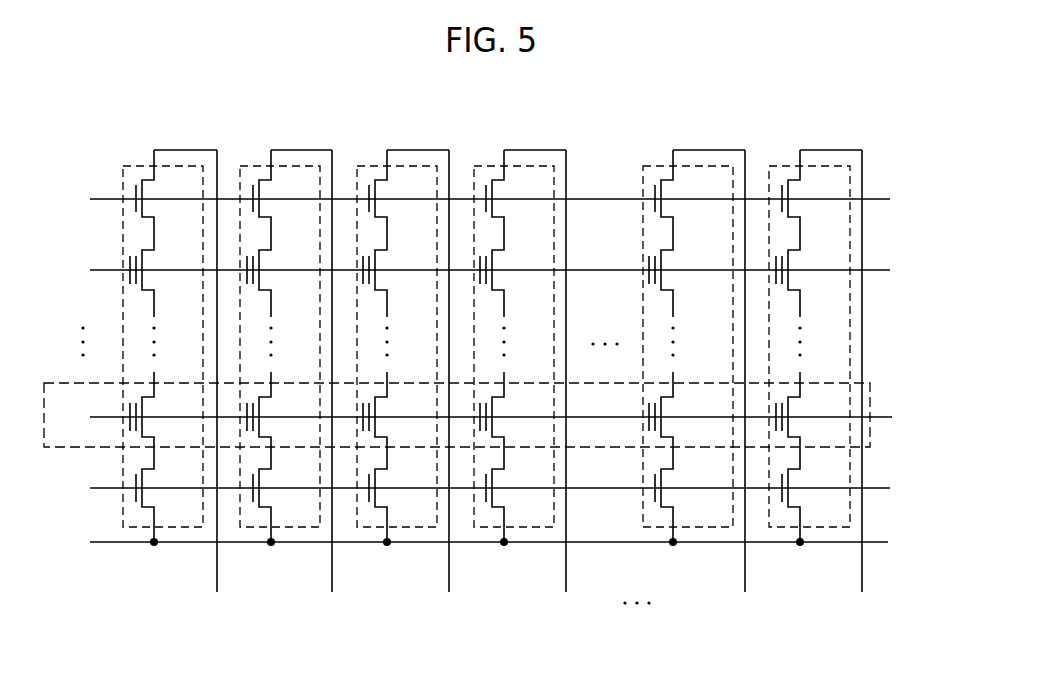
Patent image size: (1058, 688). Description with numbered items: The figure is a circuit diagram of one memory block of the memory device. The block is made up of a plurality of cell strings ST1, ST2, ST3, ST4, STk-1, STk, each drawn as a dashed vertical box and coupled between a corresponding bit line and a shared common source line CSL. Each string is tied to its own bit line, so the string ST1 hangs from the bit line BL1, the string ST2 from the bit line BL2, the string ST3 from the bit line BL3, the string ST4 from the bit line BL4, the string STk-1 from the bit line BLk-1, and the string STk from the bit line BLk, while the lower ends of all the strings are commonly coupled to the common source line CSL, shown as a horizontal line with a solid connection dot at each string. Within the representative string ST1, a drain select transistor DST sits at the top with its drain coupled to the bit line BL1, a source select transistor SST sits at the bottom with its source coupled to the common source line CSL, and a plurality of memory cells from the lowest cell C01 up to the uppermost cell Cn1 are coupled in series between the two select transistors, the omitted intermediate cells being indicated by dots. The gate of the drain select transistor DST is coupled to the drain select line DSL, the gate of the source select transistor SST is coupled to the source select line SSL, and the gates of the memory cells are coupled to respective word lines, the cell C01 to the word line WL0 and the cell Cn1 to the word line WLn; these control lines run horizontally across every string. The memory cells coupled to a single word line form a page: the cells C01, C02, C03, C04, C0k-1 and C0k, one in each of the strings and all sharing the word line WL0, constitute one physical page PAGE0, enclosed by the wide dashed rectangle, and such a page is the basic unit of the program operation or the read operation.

The string ST1 is at (170, 324).
The string ST2 is at (286, 324).
The string ST3 is at (403, 324).
The string ST4 is at (520, 324).
The string STk-1 is at (694, 324).
The string STk is at (815, 324).
The bit line BL1 is at (218, 385).
The bit line BL2 is at (333, 385).
The bit line BL3 is at (450, 385).
The bit line BL4 is at (567, 385).
The bit line BLk-1 is at (756, 385).
The bit line BLk is at (865, 385).
The drain select line DSL is at (471, 200).
The word line WLn is at (470, 271).
The word line WL0 is at (472, 419).
The source select line SSL is at (472, 490).
The common source line CSL is at (471, 544).
The physical page PAGE0 is at (872, 386).
The drain select transistor DST is at (166, 194).
The memory cell Cn1 is at (162, 265).
The memory cell C01 is at (163, 413).
The memory cell C02 is at (280, 413).
The memory cell C03 is at (396, 413).
The memory cell C04 is at (513, 413).
The memory cell C0k-1 is at (689, 413).
The memory cell C0k is at (808, 413).
The source select transistor SST is at (165, 484).